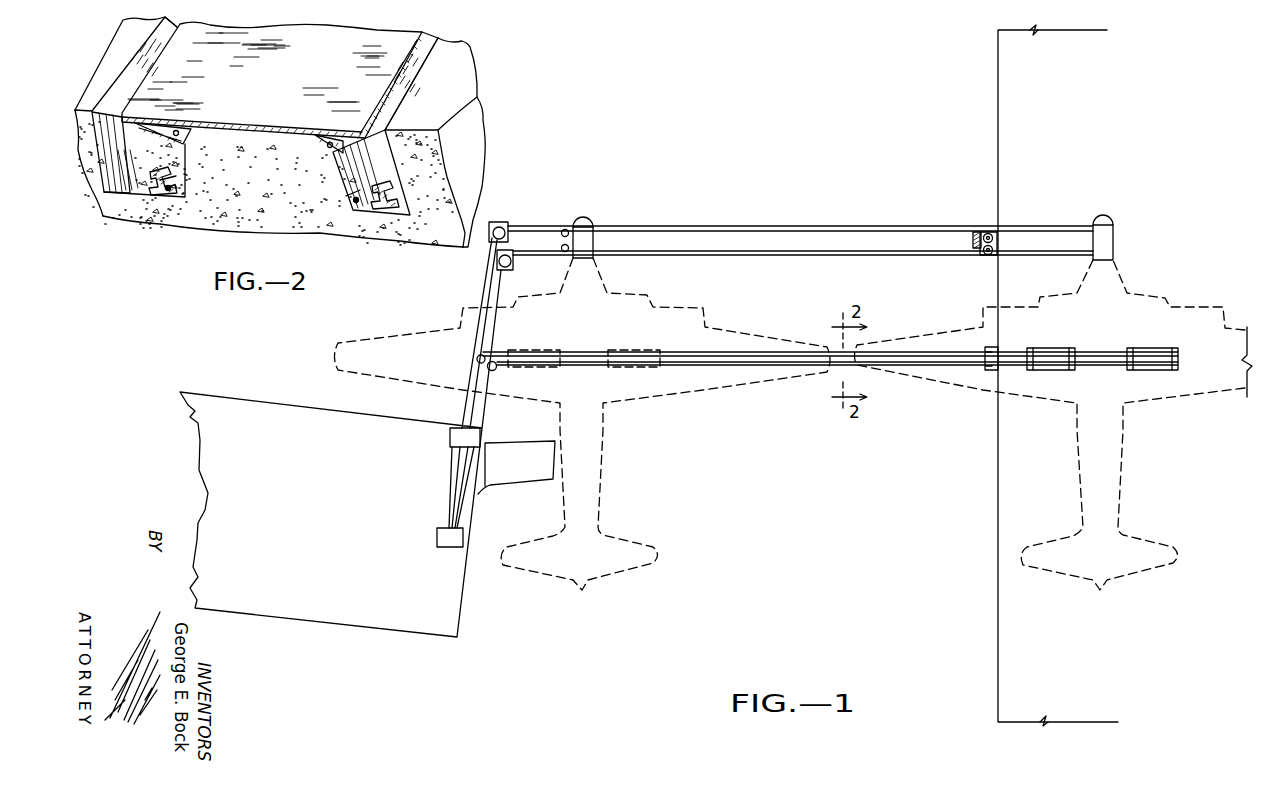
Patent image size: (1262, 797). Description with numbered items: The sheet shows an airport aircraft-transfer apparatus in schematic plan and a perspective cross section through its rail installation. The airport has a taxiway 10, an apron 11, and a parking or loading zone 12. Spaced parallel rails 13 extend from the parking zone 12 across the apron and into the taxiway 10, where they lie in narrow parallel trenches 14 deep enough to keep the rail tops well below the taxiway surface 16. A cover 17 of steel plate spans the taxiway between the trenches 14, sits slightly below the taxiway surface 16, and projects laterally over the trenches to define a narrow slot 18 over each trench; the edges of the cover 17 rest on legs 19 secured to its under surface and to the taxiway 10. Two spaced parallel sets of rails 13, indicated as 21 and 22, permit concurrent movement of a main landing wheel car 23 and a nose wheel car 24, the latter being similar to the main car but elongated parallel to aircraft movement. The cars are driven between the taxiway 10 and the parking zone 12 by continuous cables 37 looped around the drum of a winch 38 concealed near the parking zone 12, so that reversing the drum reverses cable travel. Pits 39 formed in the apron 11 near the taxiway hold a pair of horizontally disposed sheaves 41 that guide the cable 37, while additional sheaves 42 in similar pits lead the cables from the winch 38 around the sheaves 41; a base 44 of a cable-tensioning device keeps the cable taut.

In FIG. 1, the taxiway 10 is at (1046, 697).
In FIG. 1, the apron 11 is at (845, 550).
In FIG. 1, the parking or loading zone 12 is at (424, 316).
In FIG. 2, the rails 13 is at (382, 188).
In FIG. 2, the trenches 14 is at (132, 153).
In FIG. 2, the taxiway surface 16 is at (112, 48).
In FIG. 2, the cover 17 is at (347, 82).
In FIG. 2, the slot 18 is at (157, 46).
In FIG. 2, the legs 19 is at (345, 136).
In FIG. 1, the set of rails 21 is at (790, 366).
In FIG. 1, the set of rails 22 is at (831, 258).
In FIG. 1, the main landing wheel car 23 is at (1162, 358).
In FIG. 1, the nose wheel car 24 is at (1108, 238).
In FIG. 2, the cables 37 is at (170, 190).
In FIG. 1, the cables 37 is at (978, 231).
In FIG. 1, the winch 38 is at (450, 438).
In FIG. 1, the pits 39 is at (985, 367).
In FIG. 1, the sheaves 41 is at (998, 232).
In FIG. 1, the additional sheaves 42 is at (499, 226).
In FIG. 1, the base 44 is at (457, 539).